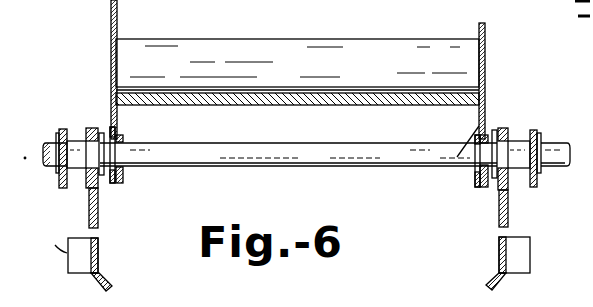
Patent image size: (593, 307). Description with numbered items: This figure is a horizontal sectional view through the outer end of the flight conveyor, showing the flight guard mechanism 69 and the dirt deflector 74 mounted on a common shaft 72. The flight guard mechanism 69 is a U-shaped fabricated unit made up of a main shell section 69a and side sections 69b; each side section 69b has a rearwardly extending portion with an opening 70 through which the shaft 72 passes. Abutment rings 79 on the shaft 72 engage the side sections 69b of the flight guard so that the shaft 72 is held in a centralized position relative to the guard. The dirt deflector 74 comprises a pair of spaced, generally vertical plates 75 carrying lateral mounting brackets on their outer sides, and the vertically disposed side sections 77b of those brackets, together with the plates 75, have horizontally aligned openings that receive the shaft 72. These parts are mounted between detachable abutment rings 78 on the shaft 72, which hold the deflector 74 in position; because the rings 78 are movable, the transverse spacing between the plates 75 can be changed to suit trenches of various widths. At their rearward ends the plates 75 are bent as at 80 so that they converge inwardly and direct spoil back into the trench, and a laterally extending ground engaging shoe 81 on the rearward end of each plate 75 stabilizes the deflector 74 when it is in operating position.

The flight guard mechanism 69 is at (444, 38).
The main shell section 69a is at (353, 104).
The side sections 69b is at (112, 62).
The opening 70 is at (118, 134).
The shaft 72 is at (404, 166).
The dirt deflector 74 is at (83, 223).
The plates 75 is at (100, 222).
The side sections 77b is at (88, 128).
The abutment rings 78 is at (62, 128).
The abutment rings 79 is at (121, 178).
The bent portion 80 is at (107, 278).
The ground engaging shoe 81 is at (77, 260).